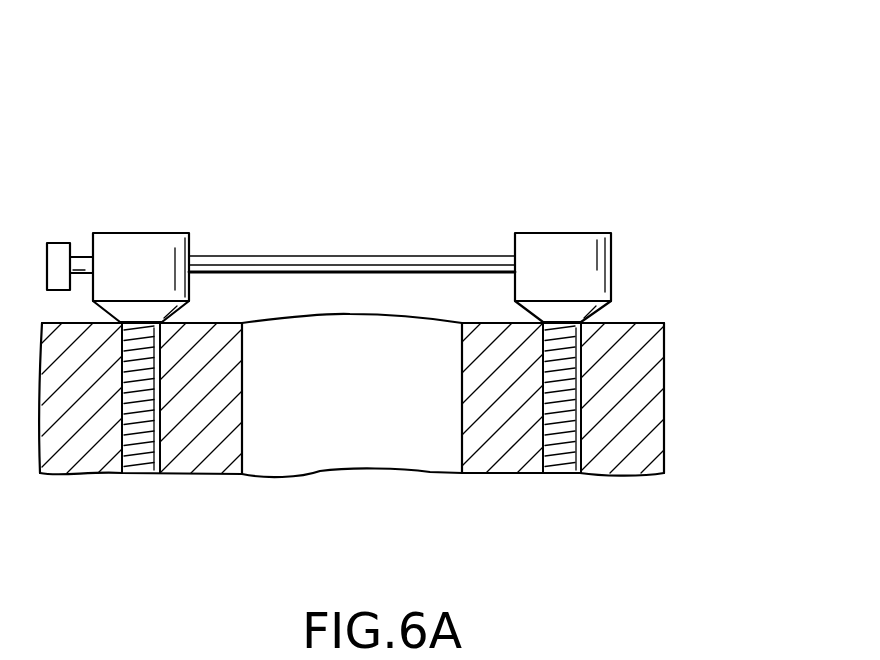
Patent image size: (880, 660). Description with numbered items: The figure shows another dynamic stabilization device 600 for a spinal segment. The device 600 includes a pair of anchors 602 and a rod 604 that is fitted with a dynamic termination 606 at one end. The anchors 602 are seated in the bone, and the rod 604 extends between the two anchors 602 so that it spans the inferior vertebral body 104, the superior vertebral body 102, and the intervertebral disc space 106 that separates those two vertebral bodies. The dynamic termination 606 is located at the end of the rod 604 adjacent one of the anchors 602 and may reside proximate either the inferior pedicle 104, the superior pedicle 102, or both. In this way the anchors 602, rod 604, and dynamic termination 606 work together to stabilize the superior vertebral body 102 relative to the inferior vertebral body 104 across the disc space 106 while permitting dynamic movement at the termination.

The dynamic stabilization device 600 is at (773, 121).
The anchors 602 is at (160, 233).
The rod 604 is at (450, 257).
The dynamic termination 606 is at (59, 242).
The superior vertebral body 102 is at (643, 400).
The inferior vertebral body 104 is at (200, 455).
The intervertebral disc space 106 is at (334, 410).